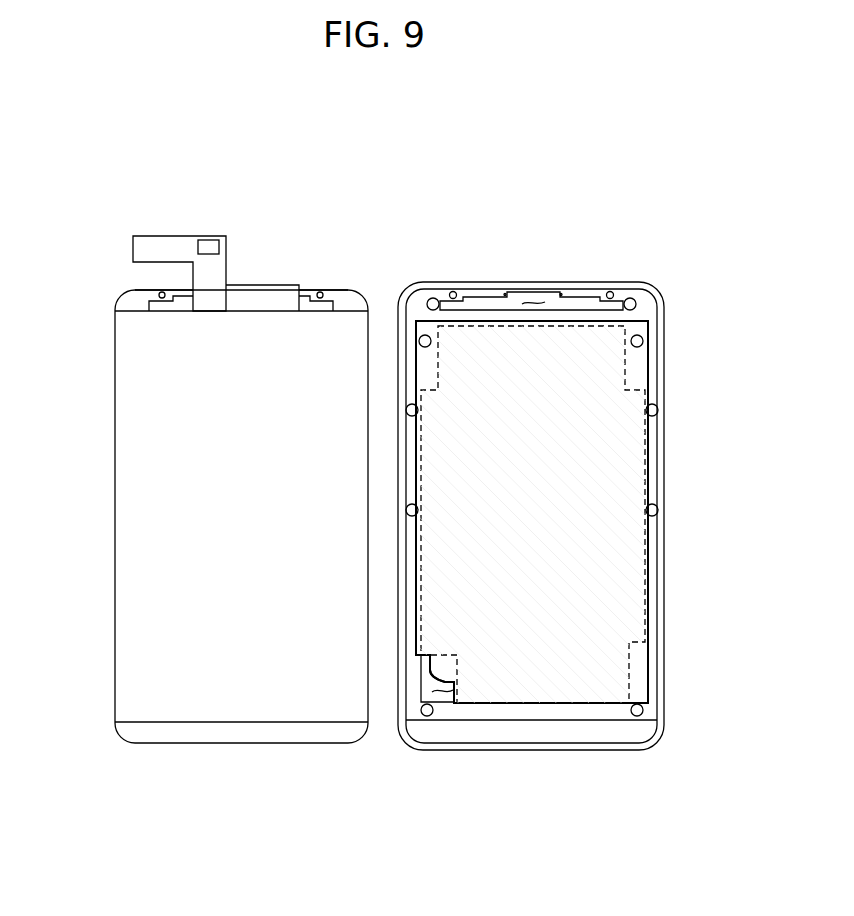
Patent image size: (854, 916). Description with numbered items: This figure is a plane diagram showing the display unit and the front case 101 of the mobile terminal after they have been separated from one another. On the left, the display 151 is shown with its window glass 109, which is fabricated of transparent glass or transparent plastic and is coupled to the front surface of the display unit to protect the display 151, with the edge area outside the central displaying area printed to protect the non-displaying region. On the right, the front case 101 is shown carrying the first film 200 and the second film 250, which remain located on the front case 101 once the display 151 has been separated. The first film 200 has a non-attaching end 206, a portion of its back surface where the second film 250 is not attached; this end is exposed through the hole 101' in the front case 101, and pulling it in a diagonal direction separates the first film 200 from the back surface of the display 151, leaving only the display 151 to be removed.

The display 151 is at (205, 516).
The window glass 109 is at (127, 297).
The front case 101 is at (531, 481).
The first film 200 is at (650, 678).
The second film 250 is at (613, 630).
The non-attaching end 206 is at (432, 674).
The hole 101' is at (452, 746).